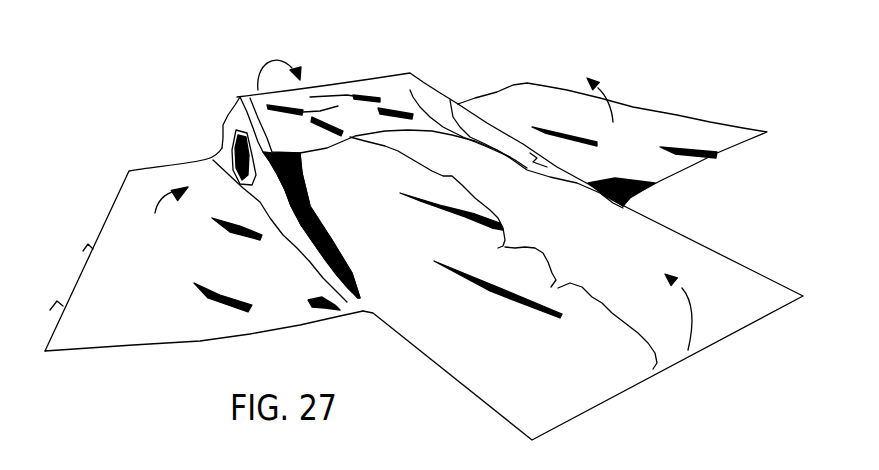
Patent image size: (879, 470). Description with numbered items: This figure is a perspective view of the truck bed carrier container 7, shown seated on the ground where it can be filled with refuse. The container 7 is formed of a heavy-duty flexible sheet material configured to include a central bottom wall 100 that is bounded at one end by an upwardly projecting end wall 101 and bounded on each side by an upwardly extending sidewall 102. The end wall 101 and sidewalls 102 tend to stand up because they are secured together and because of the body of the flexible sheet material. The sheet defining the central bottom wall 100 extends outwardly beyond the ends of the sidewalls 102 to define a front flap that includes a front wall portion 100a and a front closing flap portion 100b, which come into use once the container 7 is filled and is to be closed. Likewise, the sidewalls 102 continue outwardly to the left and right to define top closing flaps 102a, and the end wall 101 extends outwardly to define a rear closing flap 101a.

The truck bed carrier container 7 is at (536, 36).
The central bottom wall 100 is at (445, 177).
The front wall portion 100a is at (523, 247).
The front closing flap portion 100b is at (591, 297).
The end wall 101 is at (338, 106).
The rear closing flap 101a is at (224, 119).
The sidewall 102 is at (452, 103).
The top closing flap 102a is at (167, 282).